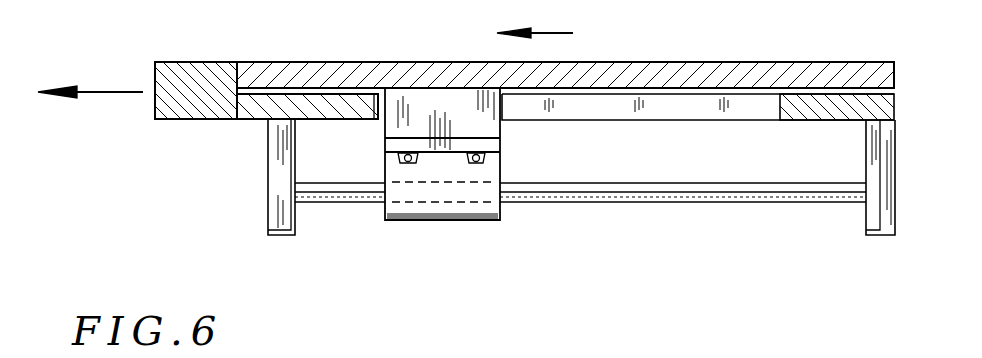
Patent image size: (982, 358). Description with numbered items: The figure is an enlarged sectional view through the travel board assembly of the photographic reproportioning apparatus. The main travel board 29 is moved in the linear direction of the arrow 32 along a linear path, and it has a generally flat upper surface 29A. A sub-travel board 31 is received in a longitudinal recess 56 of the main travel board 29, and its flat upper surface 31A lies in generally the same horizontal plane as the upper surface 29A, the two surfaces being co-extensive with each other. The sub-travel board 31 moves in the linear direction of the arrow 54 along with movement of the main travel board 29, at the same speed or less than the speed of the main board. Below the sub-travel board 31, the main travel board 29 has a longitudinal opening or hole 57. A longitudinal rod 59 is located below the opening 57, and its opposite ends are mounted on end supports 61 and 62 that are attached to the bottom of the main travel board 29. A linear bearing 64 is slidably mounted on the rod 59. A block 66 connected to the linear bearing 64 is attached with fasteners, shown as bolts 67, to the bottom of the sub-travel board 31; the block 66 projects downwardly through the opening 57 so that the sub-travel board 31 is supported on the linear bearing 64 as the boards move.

The main travel board 29 is at (183, 70).
The upper surface of main travel board 29A is at (210, 62).
The sub-travel board 31 is at (695, 72).
The upper surface of sub-travel board 31A is at (770, 63).
The arrow 32 is at (100, 92).
The arrow 54 is at (547, 31).
The longitudinal recess 56 is at (328, 88).
The longitudinal opening 57 is at (728, 105).
The longitudinal rod 59 is at (733, 190).
The end support 61 is at (278, 177).
The end support 62 is at (880, 207).
The linear bearing 64 is at (470, 221).
The block 66 is at (478, 123).
The bolt 67 is at (475, 166).